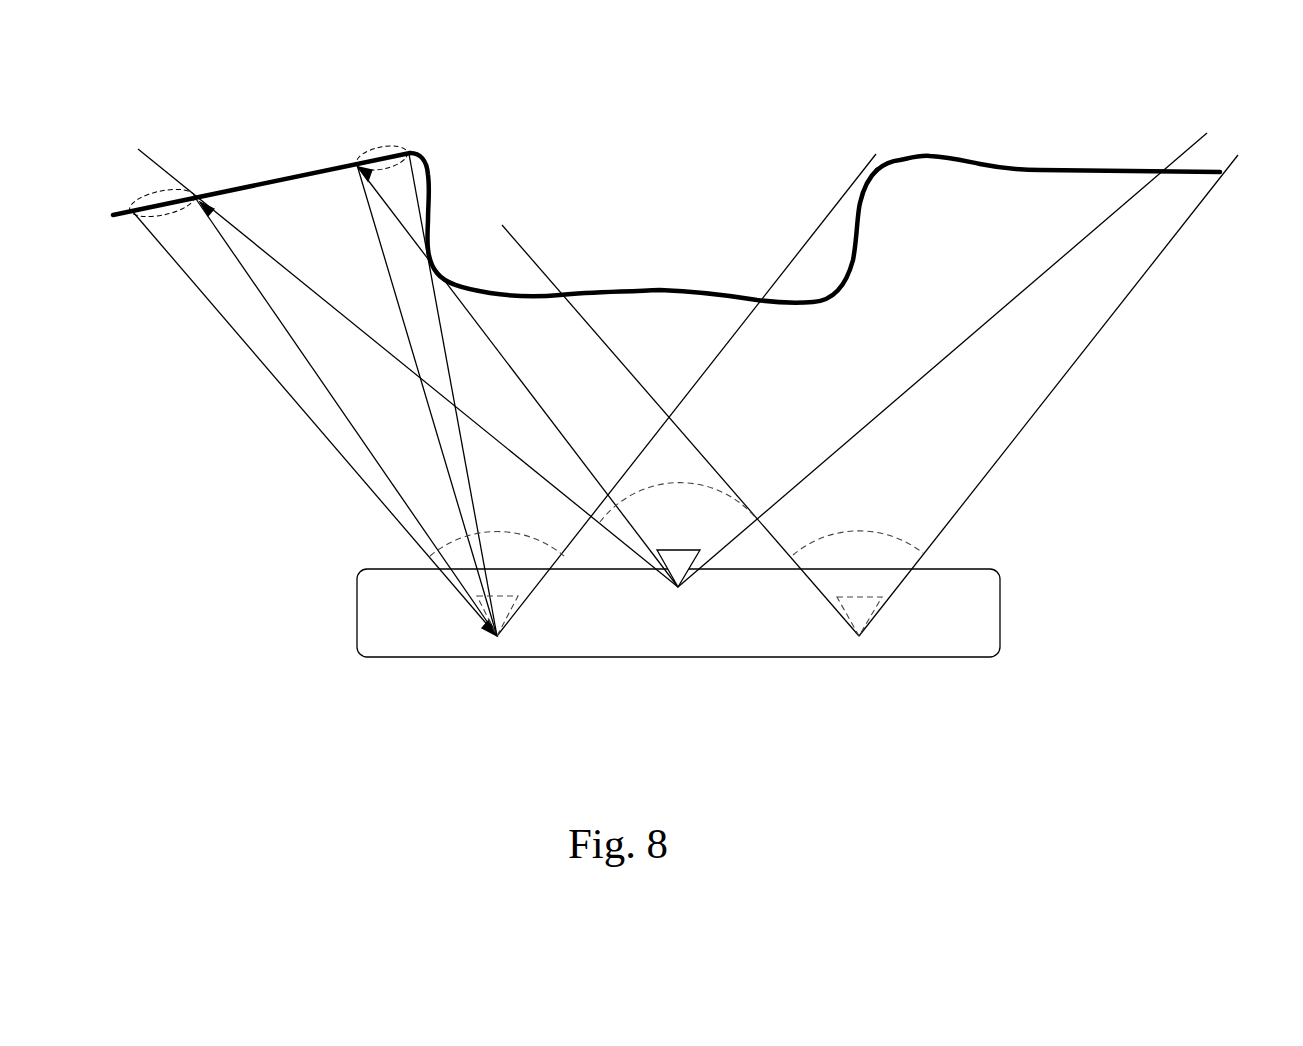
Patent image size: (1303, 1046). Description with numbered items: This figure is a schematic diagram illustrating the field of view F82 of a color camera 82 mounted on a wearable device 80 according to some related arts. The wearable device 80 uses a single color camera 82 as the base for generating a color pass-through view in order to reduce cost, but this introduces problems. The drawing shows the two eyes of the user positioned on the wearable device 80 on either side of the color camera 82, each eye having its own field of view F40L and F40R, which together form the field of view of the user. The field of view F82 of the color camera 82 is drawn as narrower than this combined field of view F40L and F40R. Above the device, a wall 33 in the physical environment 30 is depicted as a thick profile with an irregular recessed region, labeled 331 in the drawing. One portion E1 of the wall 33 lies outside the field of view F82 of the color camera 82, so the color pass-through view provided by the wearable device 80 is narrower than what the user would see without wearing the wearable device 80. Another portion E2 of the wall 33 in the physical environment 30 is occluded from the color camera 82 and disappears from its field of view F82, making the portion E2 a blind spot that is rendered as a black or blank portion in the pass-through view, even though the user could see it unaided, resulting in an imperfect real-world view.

The physical environment 30 is at (160, 96).
The wall 33 is at (1045, 170).
The curved portion of reflective surface 331 is at (652, 287).
The portion E1 is at (130, 203).
The portion E2 is at (383, 147).
The wearable device 80 is at (432, 643).
The color camera 82 is at (673, 590).
The field of view F40L is at (513, 532).
The field of view F40R is at (860, 533).
The field of view F82 is at (680, 487).